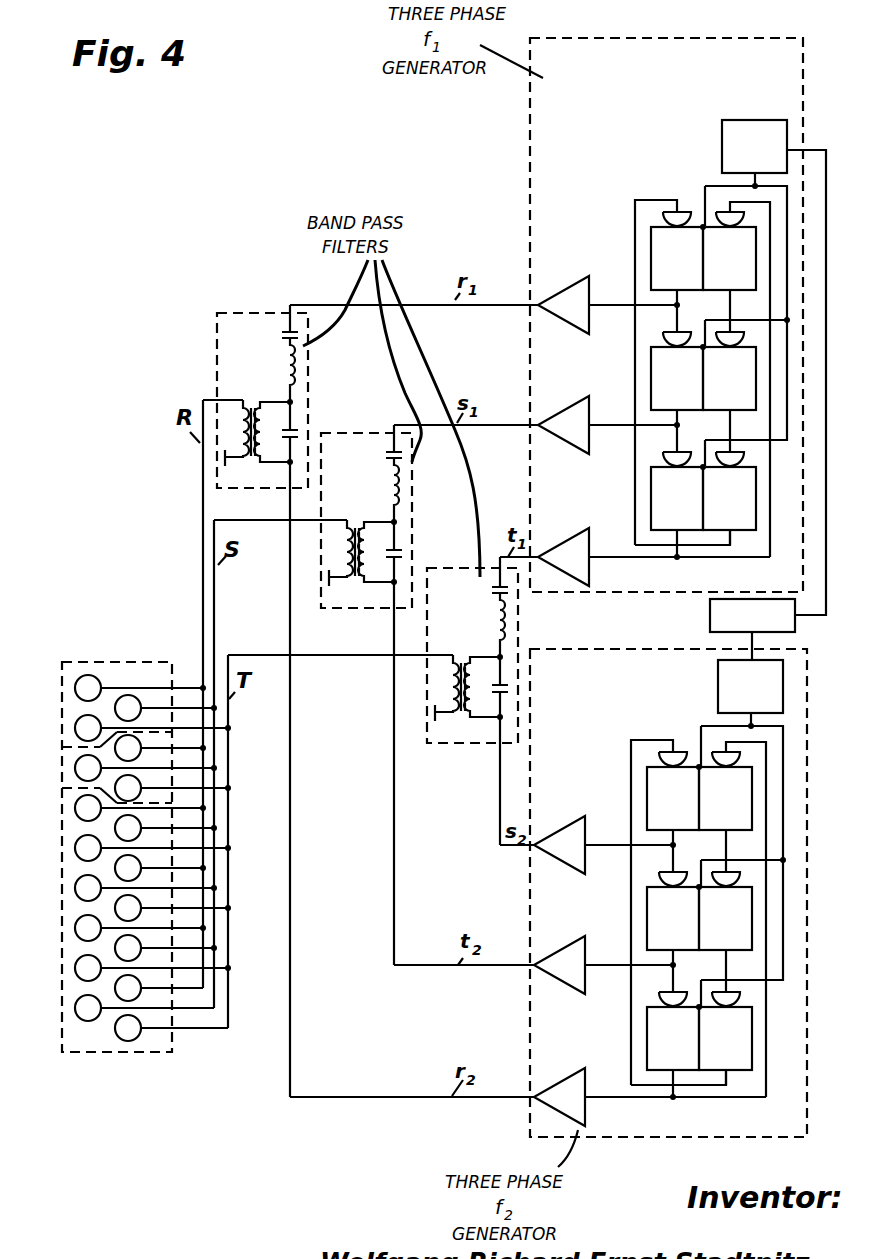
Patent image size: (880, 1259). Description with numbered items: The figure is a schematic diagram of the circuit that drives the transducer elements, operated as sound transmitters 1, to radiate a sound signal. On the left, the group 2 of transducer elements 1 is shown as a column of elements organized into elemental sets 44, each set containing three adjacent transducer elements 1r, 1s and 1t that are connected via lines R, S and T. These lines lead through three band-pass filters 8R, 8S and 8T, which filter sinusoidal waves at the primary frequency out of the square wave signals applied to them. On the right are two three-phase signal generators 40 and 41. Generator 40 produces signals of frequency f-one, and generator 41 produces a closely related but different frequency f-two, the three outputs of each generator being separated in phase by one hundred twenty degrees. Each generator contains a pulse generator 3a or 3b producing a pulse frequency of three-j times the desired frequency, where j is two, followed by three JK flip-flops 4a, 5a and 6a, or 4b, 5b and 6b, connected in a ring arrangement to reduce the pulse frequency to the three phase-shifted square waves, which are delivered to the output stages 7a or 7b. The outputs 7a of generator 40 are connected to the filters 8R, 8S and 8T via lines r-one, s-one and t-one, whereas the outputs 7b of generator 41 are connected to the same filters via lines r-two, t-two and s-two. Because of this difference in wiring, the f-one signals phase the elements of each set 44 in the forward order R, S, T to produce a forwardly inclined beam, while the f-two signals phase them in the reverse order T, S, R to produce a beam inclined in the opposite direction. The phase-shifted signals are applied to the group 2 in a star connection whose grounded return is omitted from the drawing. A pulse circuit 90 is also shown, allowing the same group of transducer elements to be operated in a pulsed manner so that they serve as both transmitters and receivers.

The transducer element 1 is at (127, 1027).
The transducer element for line R 1r is at (88, 688).
The transducer element for line T 1t is at (90, 726).
The transducer element for line S 1s is at (128, 708).
The group of transducer elements 2 is at (160, 1037).
The pulse generator of the f1 generator 3a is at (760, 130).
The pulse generator of the f2 generator 3b is at (725, 661).
The JK flip-flop 4a is at (670, 258).
The JK flip-flop 4b is at (673, 807).
The JK flip-flop 5a is at (673, 380).
The JK flip-flop 5b is at (673, 924).
The JK flip-flop 6a is at (668, 498).
The JK flip-flop 6b is at (672, 1038).
The output stages of the f1 generator 7a is at (580, 540).
The output stages of the f2 generator 7b is at (623, 971).
The band-pass filter for line R 8R is at (305, 387).
The band-pass filter for line S 8S is at (407, 510).
The band-pass filter for line T 8T is at (512, 640).
The three-phase signal generator 40 is at (537, 153).
The three-phase signal generator 41 is at (798, 703).
The elemental set of transducer elements 44 is at (68, 763).
The pulse circuit 90 is at (789, 623).